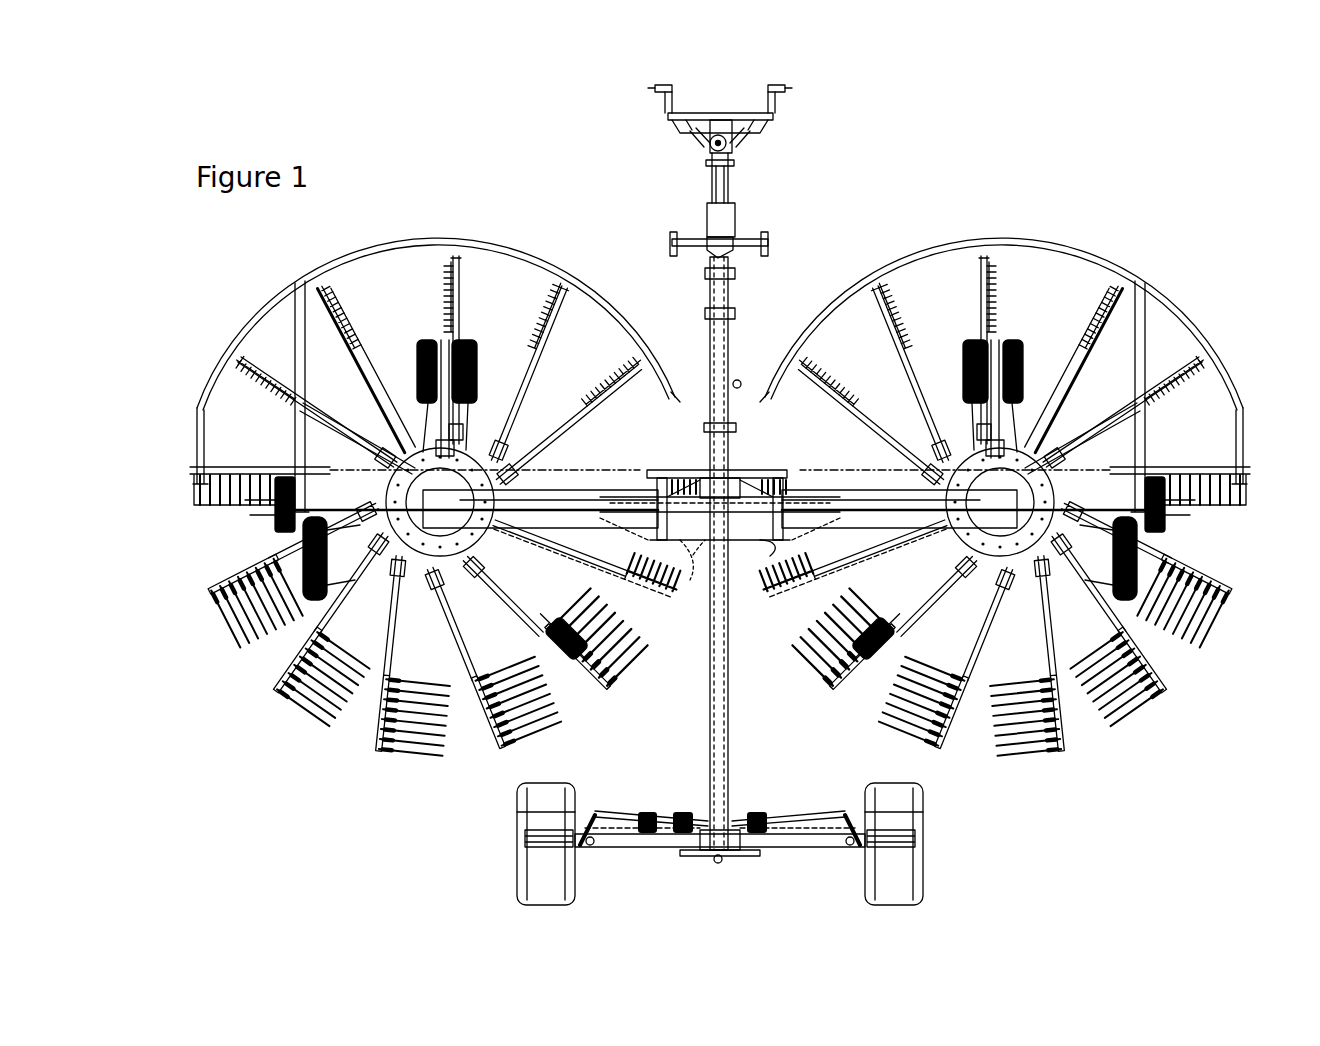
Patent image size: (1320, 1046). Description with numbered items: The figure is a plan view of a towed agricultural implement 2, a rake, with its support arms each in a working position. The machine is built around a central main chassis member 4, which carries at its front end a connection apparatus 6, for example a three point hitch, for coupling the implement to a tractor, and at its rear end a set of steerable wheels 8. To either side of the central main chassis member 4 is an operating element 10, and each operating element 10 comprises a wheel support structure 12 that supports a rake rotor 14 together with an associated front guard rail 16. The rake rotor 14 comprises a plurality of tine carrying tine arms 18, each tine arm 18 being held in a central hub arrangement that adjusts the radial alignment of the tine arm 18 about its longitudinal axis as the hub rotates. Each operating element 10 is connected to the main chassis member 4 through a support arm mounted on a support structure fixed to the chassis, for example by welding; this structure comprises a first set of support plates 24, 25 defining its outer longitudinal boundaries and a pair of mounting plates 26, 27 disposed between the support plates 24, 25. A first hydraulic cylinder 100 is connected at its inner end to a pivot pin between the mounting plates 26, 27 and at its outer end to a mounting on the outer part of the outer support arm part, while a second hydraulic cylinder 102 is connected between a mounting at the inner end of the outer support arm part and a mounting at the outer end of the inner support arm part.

The towed agricultural implement 2 is at (1067, 71).
The central main chassis member 4 is at (737, 299).
The connection apparatus 6 is at (792, 105).
The set of steerable wheels 8 is at (936, 858).
The operating element 10 is at (178, 642).
The wheel support structure 12 is at (479, 349).
The rake rotor 14 is at (370, 284).
The front guard rail 16 is at (540, 262).
The tine arm 18 is at (593, 700).
The support plate 24 is at (741, 471).
The support plate 25 is at (767, 532).
The mounting plate 26 is at (750, 490).
The mounting plate 27 is at (693, 555).
The first hydraulic cylinder 100 is at (620, 519).
The second hydraulic cylinder 102 is at (641, 478).